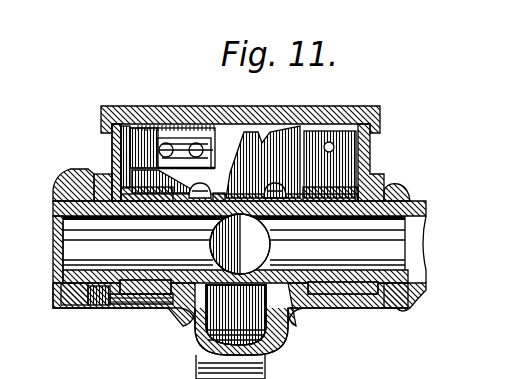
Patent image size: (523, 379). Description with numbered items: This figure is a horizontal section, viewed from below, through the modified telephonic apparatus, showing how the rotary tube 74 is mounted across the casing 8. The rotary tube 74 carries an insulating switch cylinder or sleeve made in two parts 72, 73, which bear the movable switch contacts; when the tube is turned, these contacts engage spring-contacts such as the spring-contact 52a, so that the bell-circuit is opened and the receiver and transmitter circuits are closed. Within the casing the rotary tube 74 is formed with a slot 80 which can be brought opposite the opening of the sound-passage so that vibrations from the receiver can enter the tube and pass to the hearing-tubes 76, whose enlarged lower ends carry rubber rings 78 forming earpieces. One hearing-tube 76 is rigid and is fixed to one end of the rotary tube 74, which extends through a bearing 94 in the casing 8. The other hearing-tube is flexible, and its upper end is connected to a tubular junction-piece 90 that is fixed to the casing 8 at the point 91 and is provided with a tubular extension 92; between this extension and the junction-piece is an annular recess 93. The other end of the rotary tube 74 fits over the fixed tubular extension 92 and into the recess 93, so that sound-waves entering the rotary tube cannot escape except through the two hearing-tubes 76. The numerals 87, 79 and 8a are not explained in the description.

The spring-contact 52a is at (127, 126).
The fixing point of junction-piece 91 is at (90, 176).
The tubular junction-piece 90 is at (70, 180).
The casing 8 is at (328, 144).
The spring member 87 is at (263, 162).
The spring member 79 is at (330, 164).
The hearing-tube 76 is at (397, 197).
The tubular extension 92 is at (138, 245).
The slot 80 is at (240, 244).
The rotary tube 74 is at (337, 247).
The annular recess 93 is at (88, 283).
The switch cylinder part 72 is at (126, 294).
The rubber ring 78 is at (231, 332).
The spring end 8a is at (279, 301).
The switch cylinder part 73 is at (343, 307).
The bearing 94 is at (372, 289).